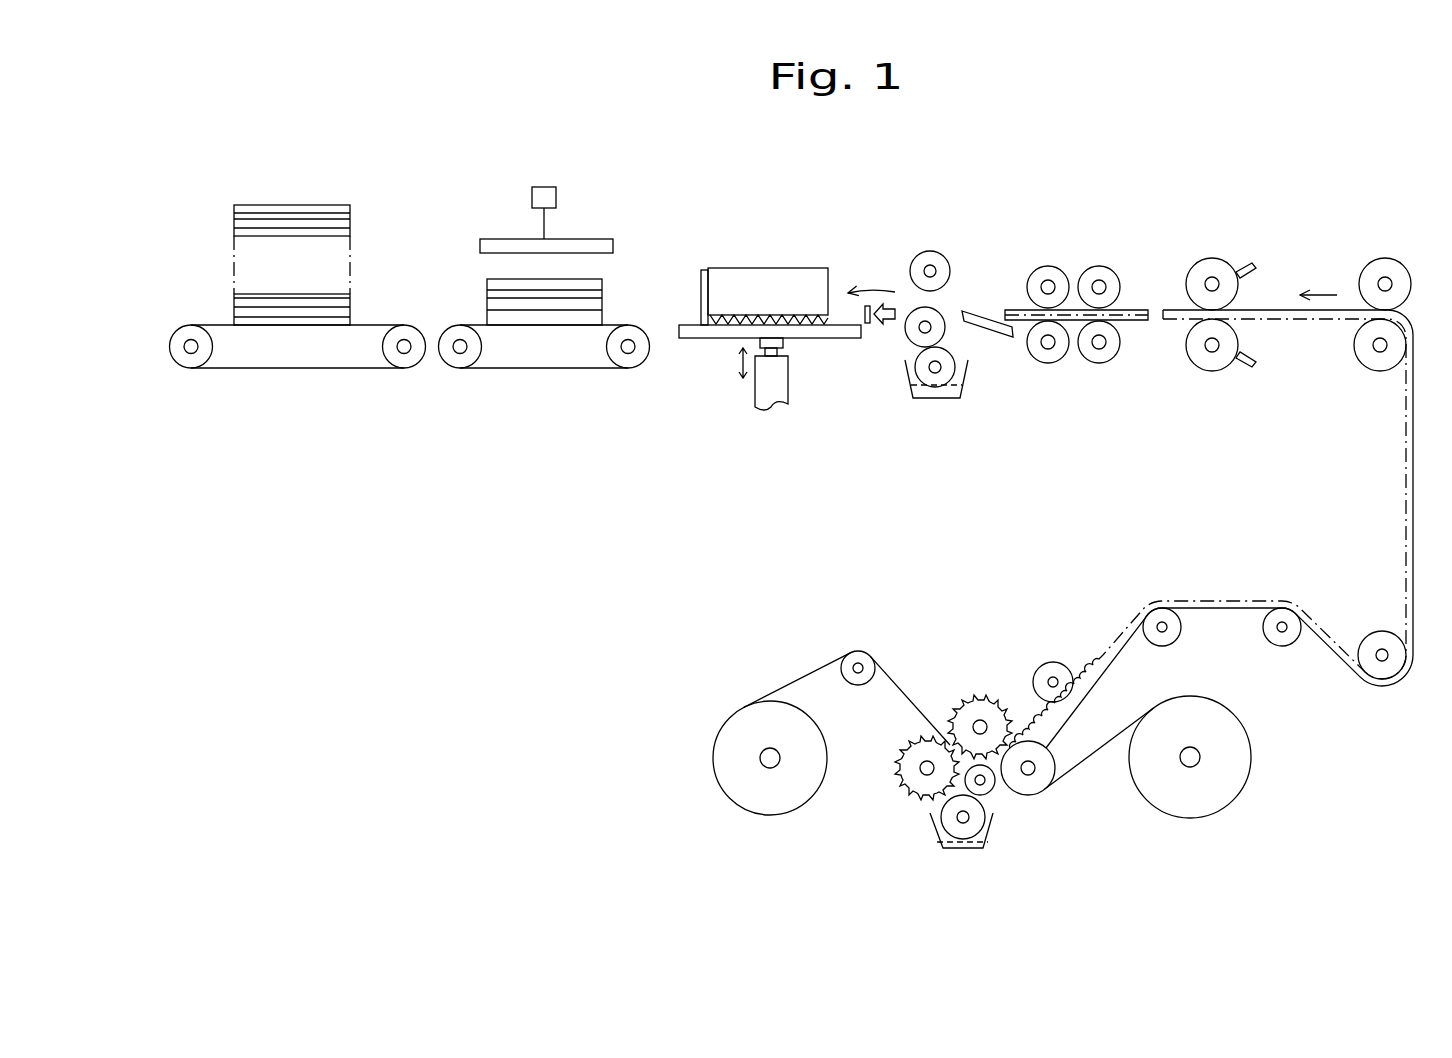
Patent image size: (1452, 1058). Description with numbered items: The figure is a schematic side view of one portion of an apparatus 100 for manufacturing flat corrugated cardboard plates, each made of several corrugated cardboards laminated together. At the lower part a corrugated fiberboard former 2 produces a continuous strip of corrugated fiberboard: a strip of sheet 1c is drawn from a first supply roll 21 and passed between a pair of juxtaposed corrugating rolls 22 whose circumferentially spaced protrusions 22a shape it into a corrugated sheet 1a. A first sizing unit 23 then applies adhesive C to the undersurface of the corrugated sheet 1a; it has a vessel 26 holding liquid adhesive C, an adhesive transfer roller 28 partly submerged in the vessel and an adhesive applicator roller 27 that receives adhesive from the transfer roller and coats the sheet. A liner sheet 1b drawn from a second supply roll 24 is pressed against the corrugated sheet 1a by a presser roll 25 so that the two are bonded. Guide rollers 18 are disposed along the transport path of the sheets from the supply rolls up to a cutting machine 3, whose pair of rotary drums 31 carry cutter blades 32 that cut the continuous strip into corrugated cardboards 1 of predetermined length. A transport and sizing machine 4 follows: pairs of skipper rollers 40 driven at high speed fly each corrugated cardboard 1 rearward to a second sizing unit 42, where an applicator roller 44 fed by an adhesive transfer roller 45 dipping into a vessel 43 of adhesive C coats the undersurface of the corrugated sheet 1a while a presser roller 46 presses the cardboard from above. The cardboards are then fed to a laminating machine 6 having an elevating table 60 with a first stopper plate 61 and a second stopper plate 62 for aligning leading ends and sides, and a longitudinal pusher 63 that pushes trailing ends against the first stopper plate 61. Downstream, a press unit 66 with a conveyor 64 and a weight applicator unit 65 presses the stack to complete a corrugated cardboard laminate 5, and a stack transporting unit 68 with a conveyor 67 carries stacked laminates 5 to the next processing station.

The corrugated cardboard 1 is at (790, 312).
The corrugated sheet 1a is at (1133, 322).
The liner sheet 1b is at (1128, 320).
The strip of sheet 1c is at (795, 688).
The corrugated fiberboard former 2 is at (975, 632).
The cutting machine 3 is at (1214, 250).
The transport and sizing machine 4 is at (1014, 218).
The corrugated cardboard laminate 5 is at (238, 222).
The laminating machine 6 is at (733, 250).
The guide roller 18 is at (1387, 260).
The first supply roll 21 is at (738, 790).
The corrugating roll 22 is at (962, 708).
The protrusion 22a is at (978, 697).
The first sizing unit 23 is at (928, 828).
The second supply roll 24 is at (1233, 765).
The presser roll 25 is at (1045, 795).
The vessel 26 is at (970, 848).
The adhesive applicator roller 27 is at (992, 790).
The adhesive transfer roller 28 is at (975, 825).
The rotary drum 31 is at (1198, 268).
The cutter blade 32 is at (1240, 268).
The skipper roller 40 is at (1093, 266).
The second sizing unit 42 is at (942, 245).
The vessel 43 is at (938, 400).
The applicator roller 44 is at (928, 380).
The adhesive transfer roller 45 is at (910, 332).
The presser roller 46 is at (918, 263).
The elevating table 60 is at (708, 338).
The first stopper plate 61 is at (703, 288).
The second stopper plate 62 is at (772, 278).
The longitudinal pusher 63 is at (866, 324).
The conveyor 64 is at (549, 368).
The weight applicator unit 65 is at (590, 238).
The press unit 66 is at (518, 228).
The conveyor 67 is at (292, 368).
The stack transporting unit 68 is at (370, 218).
The apparatus 100 is at (1290, 222).
The adhesive C is at (960, 390).